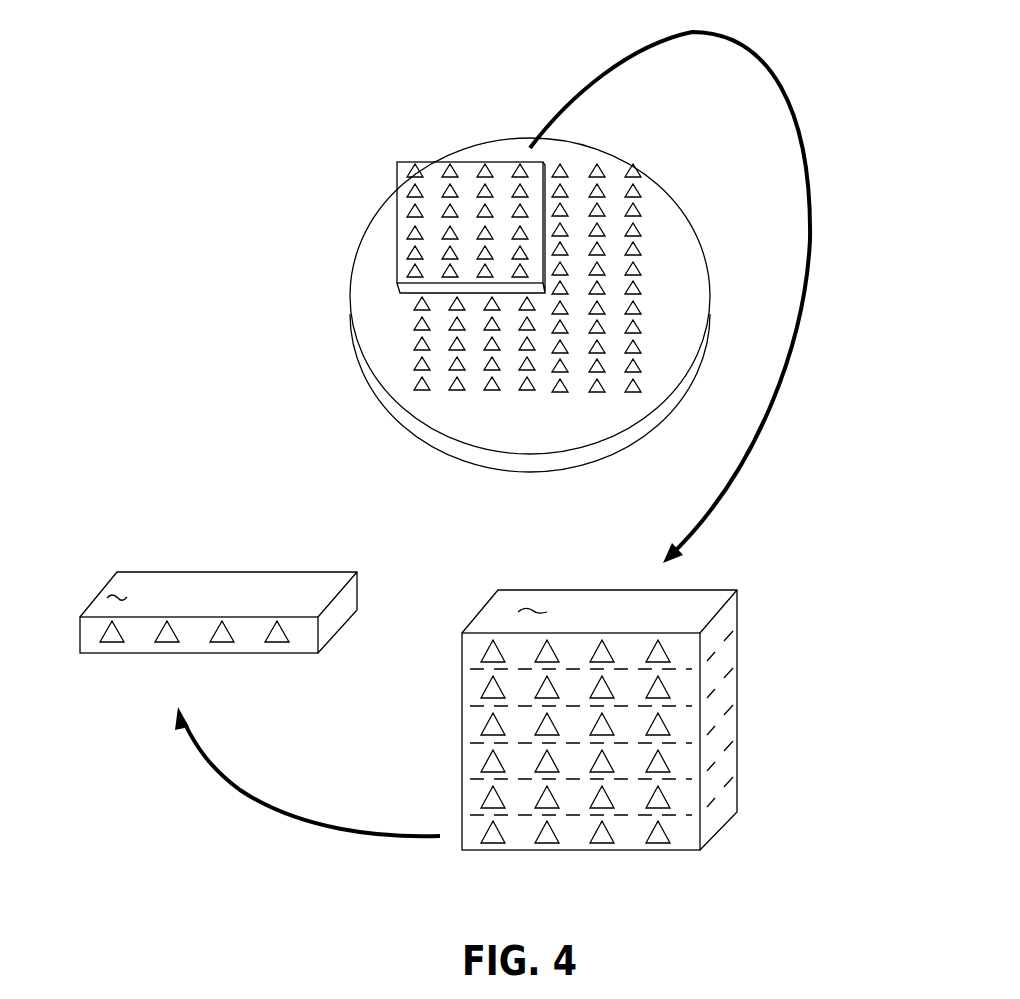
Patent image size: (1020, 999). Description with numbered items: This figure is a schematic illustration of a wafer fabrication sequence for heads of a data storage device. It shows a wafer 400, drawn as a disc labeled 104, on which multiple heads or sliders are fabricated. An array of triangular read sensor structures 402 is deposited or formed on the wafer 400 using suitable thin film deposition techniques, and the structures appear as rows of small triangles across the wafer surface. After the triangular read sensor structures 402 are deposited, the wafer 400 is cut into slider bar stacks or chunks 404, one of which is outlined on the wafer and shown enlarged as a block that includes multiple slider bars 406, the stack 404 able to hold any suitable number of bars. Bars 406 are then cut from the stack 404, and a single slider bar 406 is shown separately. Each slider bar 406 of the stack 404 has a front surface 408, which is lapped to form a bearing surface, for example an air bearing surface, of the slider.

The wafer 400 is at (500, 122).
The wafer 104 is at (563, 428).
The slider bar stack 404 is at (400, 160).
The triangular read sensor structure 402 is at (640, 185).
The slider bar 406 is at (354, 596).
The front surface 408 is at (115, 597).